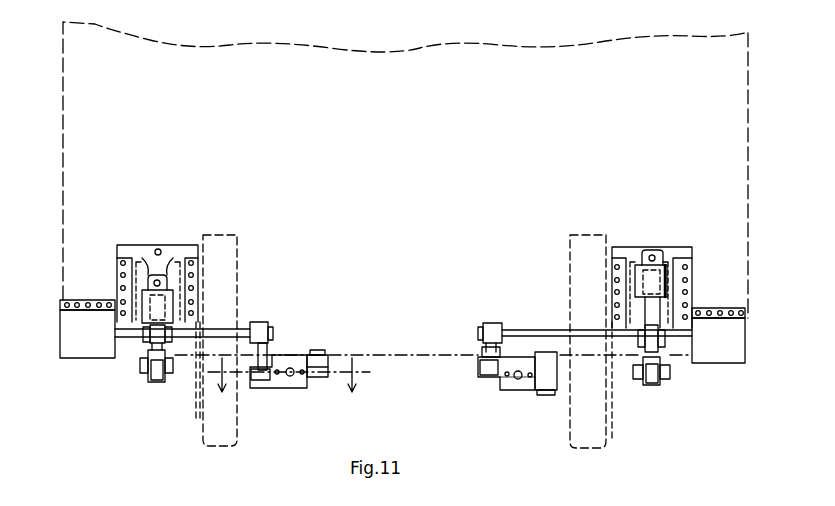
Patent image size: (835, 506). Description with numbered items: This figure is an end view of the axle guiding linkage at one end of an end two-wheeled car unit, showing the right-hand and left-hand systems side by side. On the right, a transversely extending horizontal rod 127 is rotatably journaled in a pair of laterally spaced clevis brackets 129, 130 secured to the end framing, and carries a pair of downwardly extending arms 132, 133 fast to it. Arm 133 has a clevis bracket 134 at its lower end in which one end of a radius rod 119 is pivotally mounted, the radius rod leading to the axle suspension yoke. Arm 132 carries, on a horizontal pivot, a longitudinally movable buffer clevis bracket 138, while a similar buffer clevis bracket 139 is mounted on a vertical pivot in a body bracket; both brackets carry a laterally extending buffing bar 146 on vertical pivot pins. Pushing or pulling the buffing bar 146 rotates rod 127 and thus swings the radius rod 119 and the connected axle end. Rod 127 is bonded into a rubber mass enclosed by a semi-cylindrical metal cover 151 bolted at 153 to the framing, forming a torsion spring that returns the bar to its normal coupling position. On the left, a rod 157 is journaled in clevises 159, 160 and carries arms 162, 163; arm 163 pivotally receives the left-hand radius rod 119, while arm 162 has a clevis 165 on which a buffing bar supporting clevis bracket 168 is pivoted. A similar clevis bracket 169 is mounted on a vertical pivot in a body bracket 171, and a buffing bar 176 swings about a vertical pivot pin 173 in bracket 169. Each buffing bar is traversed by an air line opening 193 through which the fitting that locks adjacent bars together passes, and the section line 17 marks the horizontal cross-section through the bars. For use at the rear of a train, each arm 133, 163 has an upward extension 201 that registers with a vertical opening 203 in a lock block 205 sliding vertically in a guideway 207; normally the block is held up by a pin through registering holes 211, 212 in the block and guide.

The section line 17 is at (295, 386).
The radius rod 119 is at (160, 382).
The horizontal rod 127 is at (217, 330).
The clevis bracket 129 is at (276, 324).
The clevis bracket 130 is at (87, 334).
The arm 132 is at (264, 350).
The arm 133 is at (148, 342).
The clevis bracket 134 is at (146, 364).
The buffer clevis bracket 138 is at (255, 388).
The buffer clevis bracket 139 is at (320, 378).
The buffing bar 146 is at (297, 388).
The semi-cylindrical metal cover 151 is at (60, 342).
The bolt 153 is at (108, 303).
The rod 157 is at (545, 332).
The clevis 159 is at (478, 331).
The clevis 160 is at (718, 342).
The arm 162 is at (484, 350).
The arm 163 is at (662, 350).
The clevis 165 is at (480, 374).
The buffing bar supporting clevis bracket 168 is at (490, 360).
The buffing bar supporting clevis bracket 169 is at (548, 395).
The body bracket 171 is at (550, 370).
The vertical pivot pin 173 is at (527, 390).
The buffing bar 176 is at (508, 388).
The air line opening 193 is at (291, 368).
The upward extension 201 is at (660, 300).
The vertical opening 203 is at (648, 249).
The lock block 205 is at (156, 248).
The guideway 207 is at (116, 244).
The hole 211 is at (232, 238).
The hole 212 is at (180, 248).